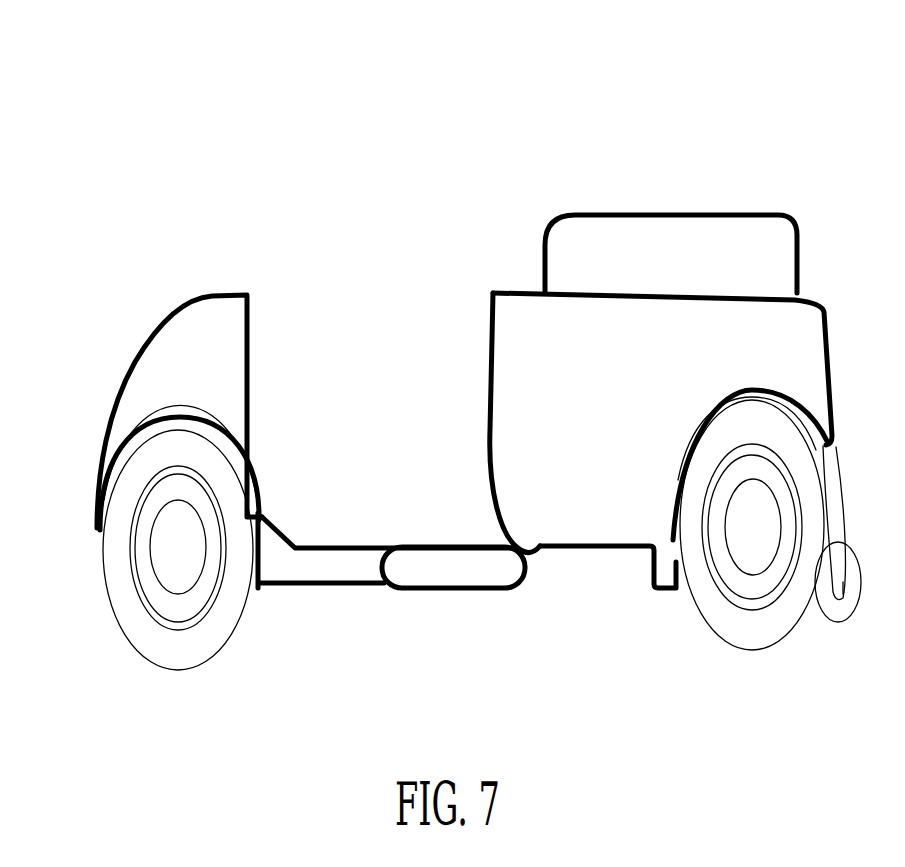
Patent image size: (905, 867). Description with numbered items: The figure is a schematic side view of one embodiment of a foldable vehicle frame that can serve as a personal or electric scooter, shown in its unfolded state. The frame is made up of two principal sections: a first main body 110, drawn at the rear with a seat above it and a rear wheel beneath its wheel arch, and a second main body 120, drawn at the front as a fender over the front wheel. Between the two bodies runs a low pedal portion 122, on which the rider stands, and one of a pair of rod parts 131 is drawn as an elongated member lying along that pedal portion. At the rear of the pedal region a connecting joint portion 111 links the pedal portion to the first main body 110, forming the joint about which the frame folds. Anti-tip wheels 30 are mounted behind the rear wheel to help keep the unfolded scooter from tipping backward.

The first main body 110 is at (522, 312).
The second main body 120 is at (148, 387).
The pedal portion 122 is at (322, 560).
The rod part 131 is at (453, 572).
The connecting joint portion 111 is at (540, 573).
The anti-tip wheels 30 is at (842, 623).